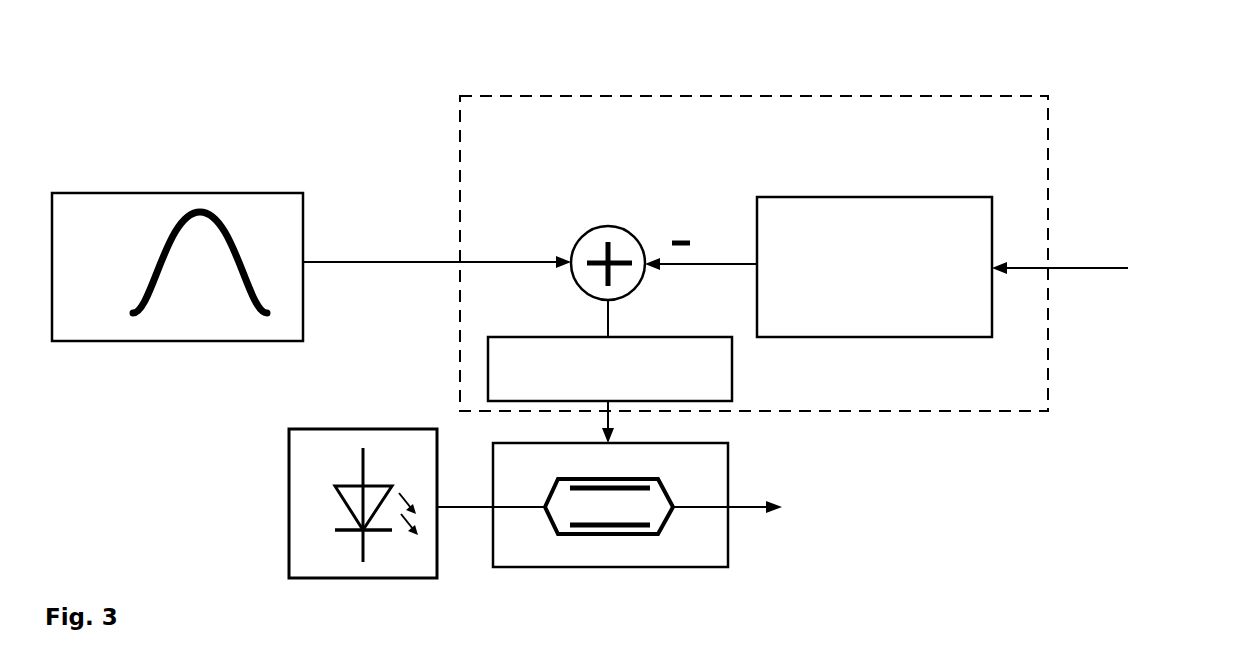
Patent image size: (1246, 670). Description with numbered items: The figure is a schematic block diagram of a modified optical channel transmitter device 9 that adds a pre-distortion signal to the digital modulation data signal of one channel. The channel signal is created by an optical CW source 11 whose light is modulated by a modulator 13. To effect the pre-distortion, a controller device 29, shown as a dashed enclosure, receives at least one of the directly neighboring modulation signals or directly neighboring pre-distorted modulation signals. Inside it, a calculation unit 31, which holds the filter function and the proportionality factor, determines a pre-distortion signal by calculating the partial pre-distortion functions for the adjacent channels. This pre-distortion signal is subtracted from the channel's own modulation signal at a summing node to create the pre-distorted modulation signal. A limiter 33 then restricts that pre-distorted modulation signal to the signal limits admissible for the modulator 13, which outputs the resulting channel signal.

The optical channel transmitter device 9 is at (380, 62).
The optical CW source 11 is at (300, 512).
The modulator 13 is at (678, 556).
The controller device 29 is at (667, 110).
The calculation unit 31 is at (860, 220).
The limiter 33 is at (722, 370).